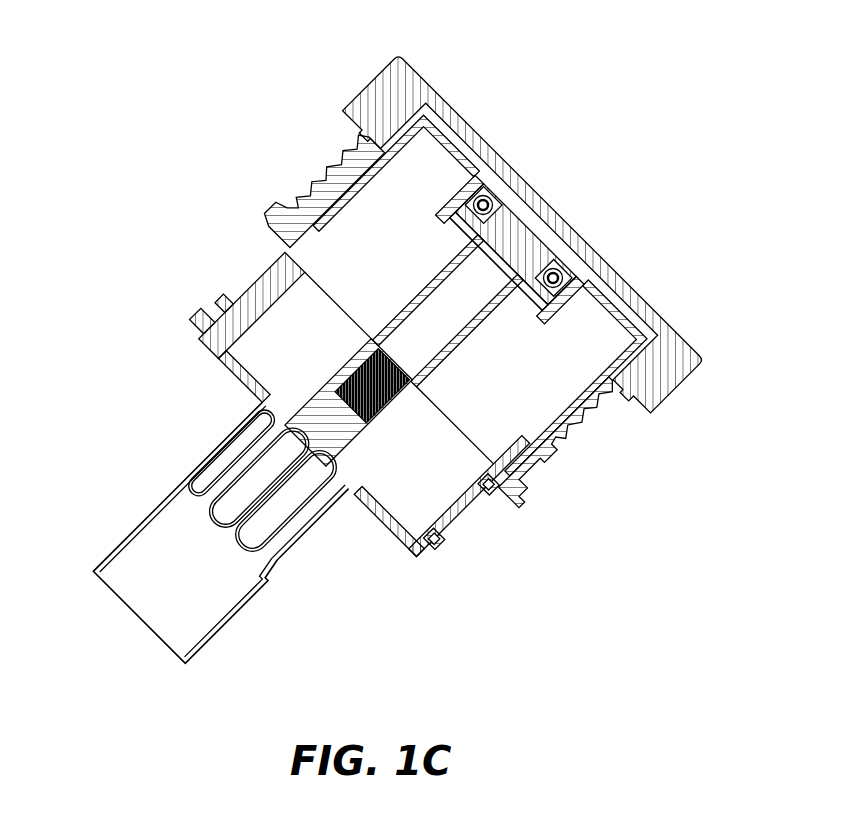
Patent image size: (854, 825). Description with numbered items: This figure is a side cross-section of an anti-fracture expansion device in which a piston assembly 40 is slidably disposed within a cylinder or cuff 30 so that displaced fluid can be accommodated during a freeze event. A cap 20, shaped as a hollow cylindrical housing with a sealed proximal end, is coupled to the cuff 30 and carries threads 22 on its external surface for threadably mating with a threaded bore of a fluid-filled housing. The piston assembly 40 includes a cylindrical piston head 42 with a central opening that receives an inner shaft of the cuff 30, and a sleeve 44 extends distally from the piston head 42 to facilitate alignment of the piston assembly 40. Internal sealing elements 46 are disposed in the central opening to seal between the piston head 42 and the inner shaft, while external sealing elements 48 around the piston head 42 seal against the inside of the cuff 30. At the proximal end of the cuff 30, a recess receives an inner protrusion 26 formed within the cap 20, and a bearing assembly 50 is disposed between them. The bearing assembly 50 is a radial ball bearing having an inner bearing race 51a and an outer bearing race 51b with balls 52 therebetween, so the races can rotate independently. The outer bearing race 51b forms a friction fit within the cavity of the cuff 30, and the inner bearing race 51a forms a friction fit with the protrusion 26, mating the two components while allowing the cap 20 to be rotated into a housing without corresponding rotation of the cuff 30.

The cap 20 is at (372, 90).
The threads 22 is at (578, 444).
The inner protrusion 26 is at (520, 248).
The cuff 30 is at (262, 220).
The piston assembly 40 is at (186, 315).
The piston head 42 is at (252, 295).
The sleeve 44 is at (135, 540).
The internal sealing elements 46 is at (318, 395).
The external sealing elements 48 is at (487, 492).
The bearing assembly 50 is at (563, 283).
The inner bearing race 51a is at (500, 245).
The outer bearing race 51b is at (482, 196).
The balls 52 is at (490, 208).